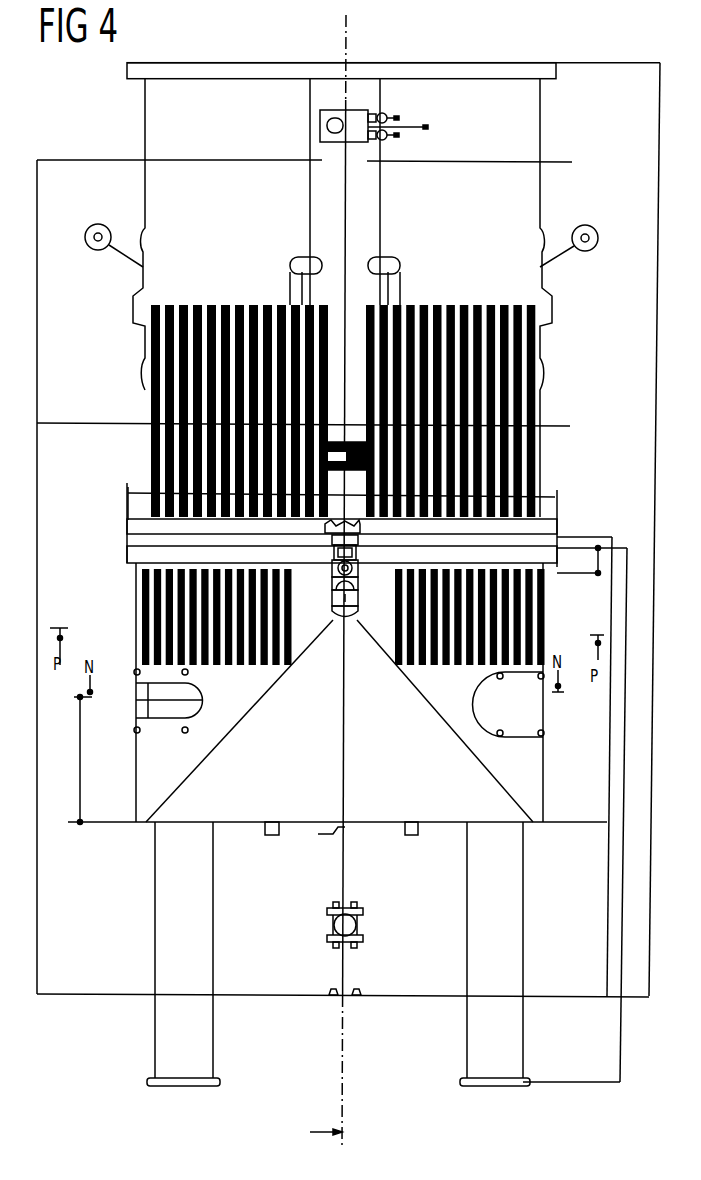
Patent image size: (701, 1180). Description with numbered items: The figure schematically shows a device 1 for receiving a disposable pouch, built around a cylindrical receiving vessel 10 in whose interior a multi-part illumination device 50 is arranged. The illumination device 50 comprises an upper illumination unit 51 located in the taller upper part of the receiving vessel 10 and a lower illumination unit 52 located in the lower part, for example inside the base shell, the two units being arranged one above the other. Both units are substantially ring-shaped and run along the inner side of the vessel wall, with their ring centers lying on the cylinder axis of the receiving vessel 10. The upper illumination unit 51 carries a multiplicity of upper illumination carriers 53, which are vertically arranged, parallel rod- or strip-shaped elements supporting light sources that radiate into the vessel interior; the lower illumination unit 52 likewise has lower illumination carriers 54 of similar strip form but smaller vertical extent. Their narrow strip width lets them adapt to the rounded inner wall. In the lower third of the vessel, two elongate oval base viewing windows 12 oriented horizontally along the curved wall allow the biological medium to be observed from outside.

The device 1 is at (618, 349).
The receiving vessel 10 is at (145, 772).
The base viewing windows 12 is at (565, 707).
The illumination device 50 is at (143, 600).
The upper illumination unit 51 is at (568, 405).
The lower illumination unit 52 is at (568, 628).
The upper illumination carriers 53 is at (238, 304).
The lower illumination carriers 54 is at (452, 683).